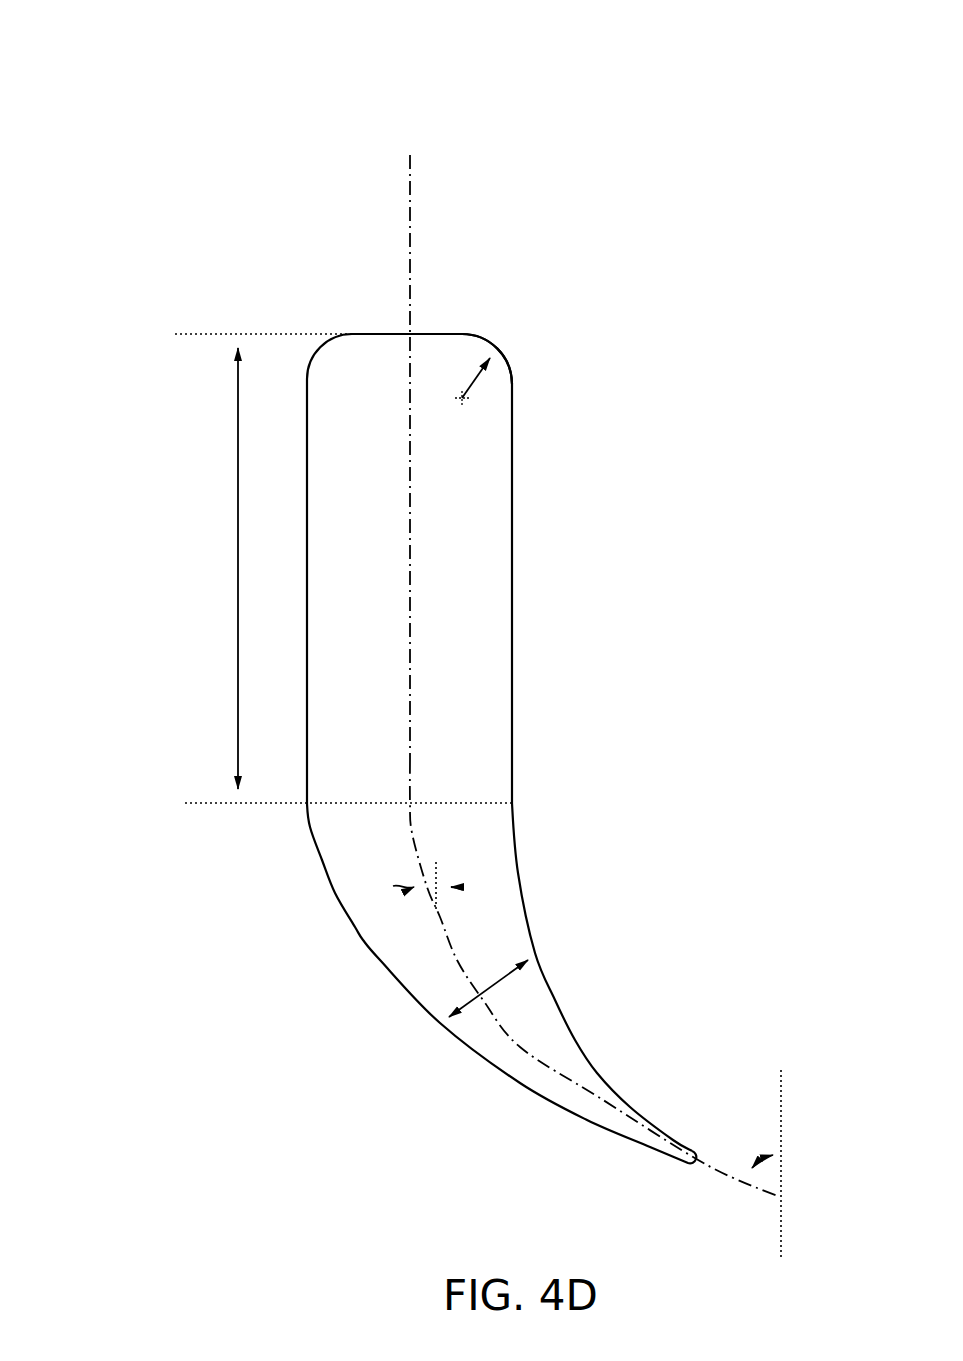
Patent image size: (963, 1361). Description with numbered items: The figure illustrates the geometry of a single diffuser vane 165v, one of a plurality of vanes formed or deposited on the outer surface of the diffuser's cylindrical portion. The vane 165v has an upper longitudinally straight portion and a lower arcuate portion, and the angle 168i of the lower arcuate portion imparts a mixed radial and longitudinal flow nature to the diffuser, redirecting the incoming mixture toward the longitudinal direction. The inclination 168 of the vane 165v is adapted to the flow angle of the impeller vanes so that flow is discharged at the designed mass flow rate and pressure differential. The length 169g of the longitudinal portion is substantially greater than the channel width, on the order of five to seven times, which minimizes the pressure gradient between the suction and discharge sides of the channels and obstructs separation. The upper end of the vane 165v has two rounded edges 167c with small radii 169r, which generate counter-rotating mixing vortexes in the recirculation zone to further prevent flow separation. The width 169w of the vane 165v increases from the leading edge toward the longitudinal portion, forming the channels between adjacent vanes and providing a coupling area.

The diffuser vane 165v is at (85, 62).
The rounded edge 167c is at (480, 340).
The small radius 169r is at (473, 383).
The length of the longitudinal portion 169g is at (238, 500).
The inclination 168 is at (463, 890).
The width of the vane 169w is at (463, 1003).
The angle 168i is at (753, 1160).